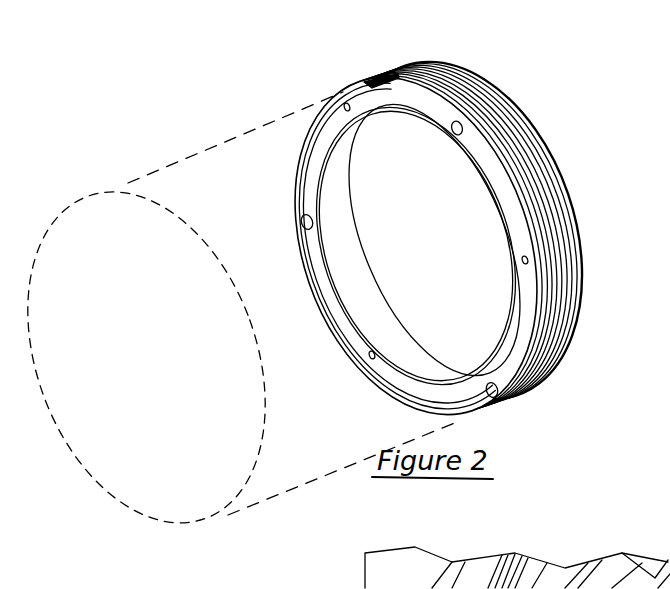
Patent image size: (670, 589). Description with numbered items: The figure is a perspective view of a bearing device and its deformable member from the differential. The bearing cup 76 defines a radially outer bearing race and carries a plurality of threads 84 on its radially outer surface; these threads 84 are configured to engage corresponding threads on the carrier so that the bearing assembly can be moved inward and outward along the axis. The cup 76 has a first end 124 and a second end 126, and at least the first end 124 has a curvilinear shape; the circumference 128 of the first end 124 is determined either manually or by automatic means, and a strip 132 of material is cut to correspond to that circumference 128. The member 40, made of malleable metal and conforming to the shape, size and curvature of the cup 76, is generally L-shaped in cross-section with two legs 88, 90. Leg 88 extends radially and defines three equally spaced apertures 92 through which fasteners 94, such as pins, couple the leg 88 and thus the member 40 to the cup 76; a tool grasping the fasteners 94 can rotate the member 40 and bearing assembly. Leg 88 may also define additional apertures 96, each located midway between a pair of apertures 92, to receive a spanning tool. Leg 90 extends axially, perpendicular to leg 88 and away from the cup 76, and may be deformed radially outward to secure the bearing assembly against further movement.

The member 40 is at (338, 306).
The cup 76 is at (437, 227).
The threads 84 is at (562, 220).
The leg 88 is at (326, 282).
The leg 90 is at (300, 265).
The apertures 92 is at (317, 218).
The fasteners 94 is at (297, 220).
The additional apertures 96 is at (345, 103).
The first end 124 is at (393, 76).
The second end 126 is at (470, 70).
The circumference 128 is at (172, 524).
The strip 132 is at (417, 107).